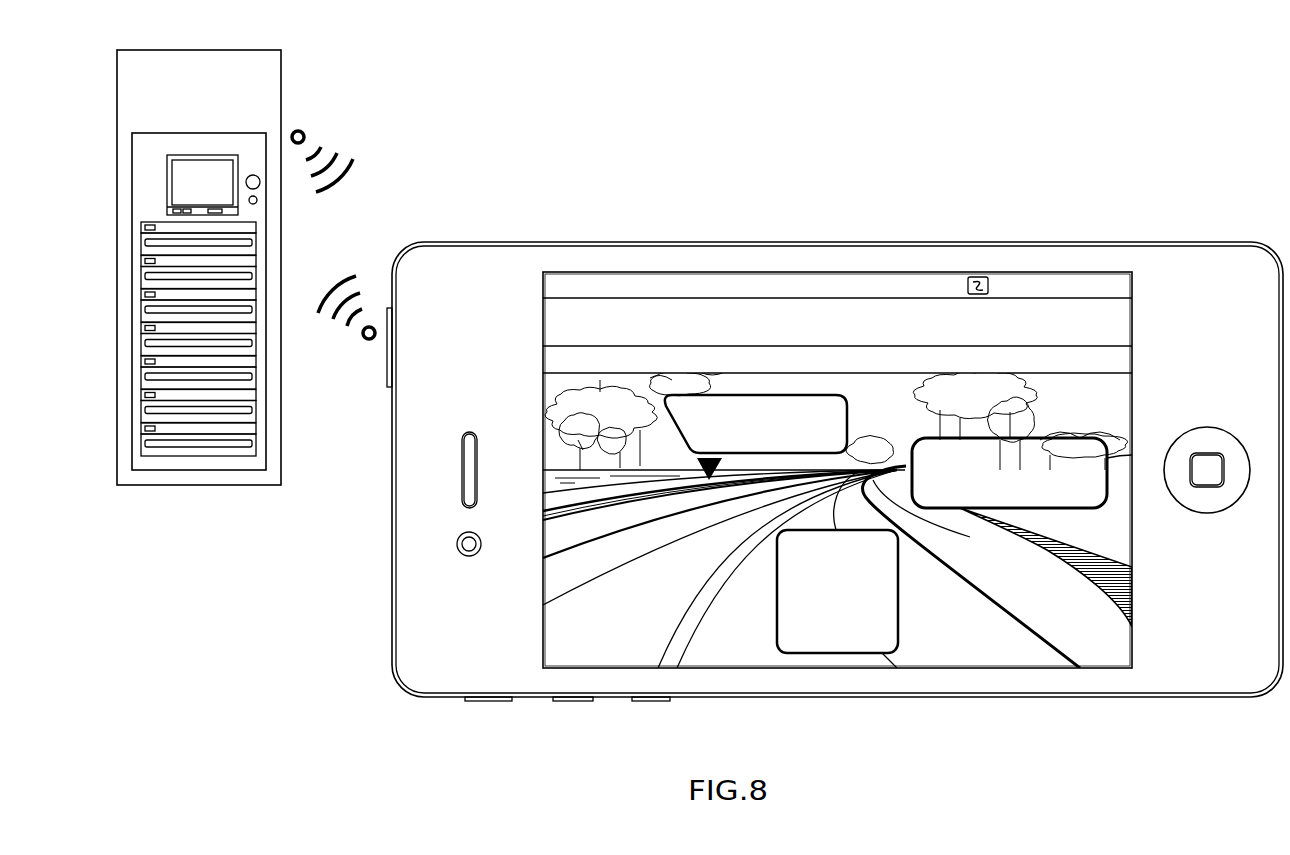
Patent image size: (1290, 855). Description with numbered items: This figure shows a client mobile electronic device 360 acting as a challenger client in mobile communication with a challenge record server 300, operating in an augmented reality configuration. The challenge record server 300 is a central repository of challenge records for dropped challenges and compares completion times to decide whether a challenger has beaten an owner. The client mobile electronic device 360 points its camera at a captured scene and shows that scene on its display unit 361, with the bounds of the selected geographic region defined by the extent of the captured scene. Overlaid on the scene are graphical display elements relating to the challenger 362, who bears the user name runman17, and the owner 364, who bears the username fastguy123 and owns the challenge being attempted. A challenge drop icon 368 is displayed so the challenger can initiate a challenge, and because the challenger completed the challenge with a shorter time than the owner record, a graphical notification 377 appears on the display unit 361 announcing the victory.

The challenge record server 300 is at (228, 50).
The client mobile electronic device 360 is at (766, 243).
The display unit 361 is at (836, 272).
The challenger 362 is at (1050, 282).
The owner 364 is at (813, 361).
The challenge drop icon 368 is at (848, 436).
The graphical notification 377 is at (835, 653).